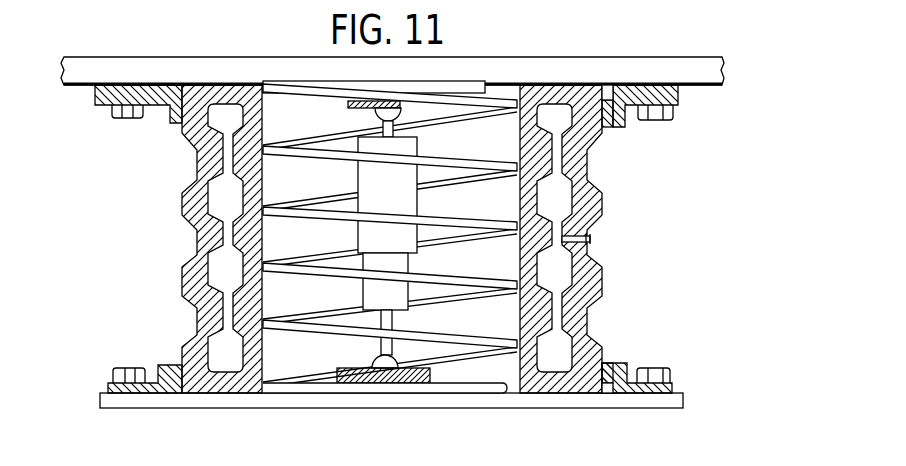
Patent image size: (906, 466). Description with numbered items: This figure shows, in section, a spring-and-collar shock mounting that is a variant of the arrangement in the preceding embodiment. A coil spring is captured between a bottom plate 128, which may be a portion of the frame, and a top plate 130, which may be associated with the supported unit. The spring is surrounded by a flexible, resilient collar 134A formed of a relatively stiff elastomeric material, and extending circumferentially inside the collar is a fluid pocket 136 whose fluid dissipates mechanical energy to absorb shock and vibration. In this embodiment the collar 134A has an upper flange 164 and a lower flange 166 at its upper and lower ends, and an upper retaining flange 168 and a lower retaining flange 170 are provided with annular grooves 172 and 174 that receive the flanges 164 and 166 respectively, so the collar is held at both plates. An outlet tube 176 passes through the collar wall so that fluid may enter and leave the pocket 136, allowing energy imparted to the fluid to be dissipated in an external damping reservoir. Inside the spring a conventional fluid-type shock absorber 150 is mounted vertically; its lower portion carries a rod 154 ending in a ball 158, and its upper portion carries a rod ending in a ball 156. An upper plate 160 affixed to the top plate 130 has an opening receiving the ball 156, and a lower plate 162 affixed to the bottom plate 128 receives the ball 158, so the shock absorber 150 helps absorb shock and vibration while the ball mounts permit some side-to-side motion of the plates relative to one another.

The bottom plate 128 is at (494, 63).
The top plate 130 is at (508, 400).
The collar 134A is at (574, 204).
The fluid pocket 136 is at (560, 208).
The shock absorber 150 is at (405, 203).
The rod 154 is at (395, 324).
The ball 156 is at (399, 122).
The ball 158 is at (371, 362).
The upper plate 160 is at (348, 104).
The lower plate 162 is at (397, 384).
The upper flange 164 is at (607, 84).
The lower flange 166 is at (609, 395).
The upper retaining flange 168 is at (680, 91).
The lower retaining flange 170 is at (671, 385).
The annular groove 172 is at (613, 128).
The annular groove 174 is at (613, 383).
The outlet tube 176 is at (593, 241).